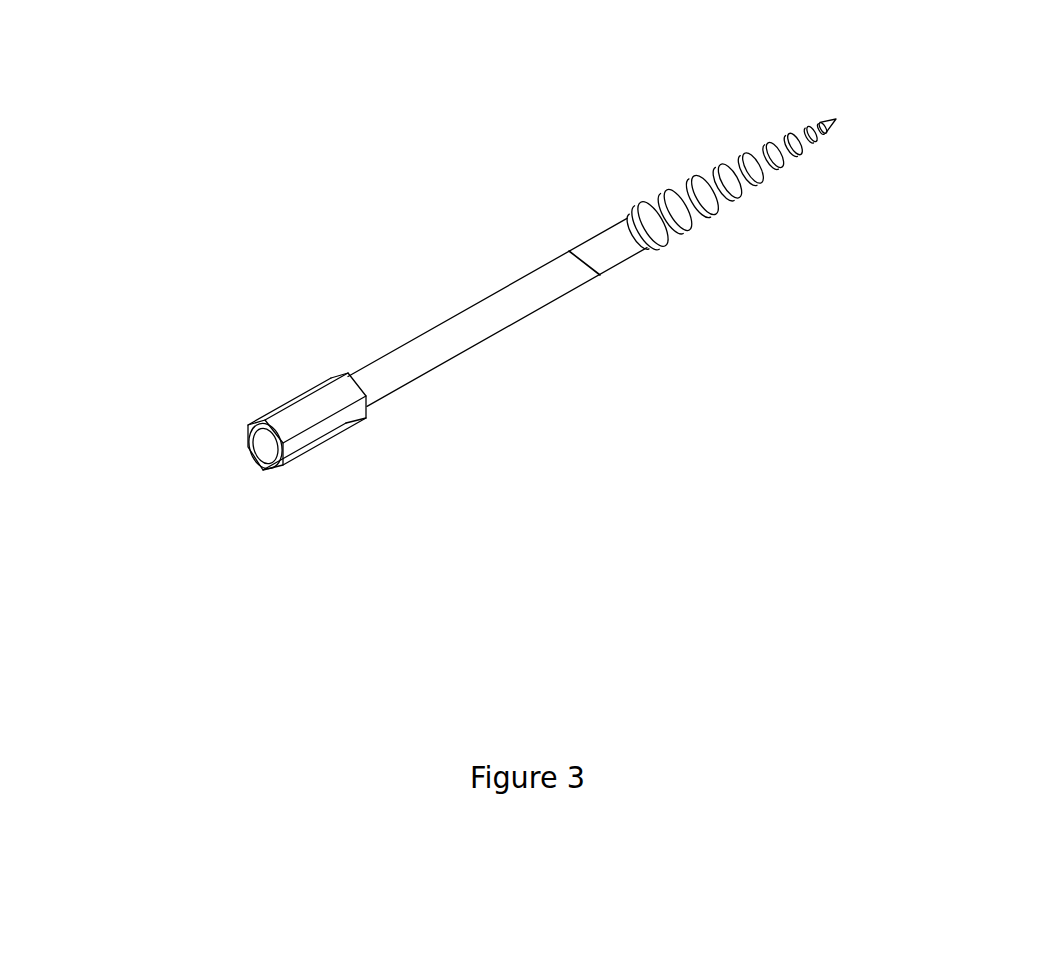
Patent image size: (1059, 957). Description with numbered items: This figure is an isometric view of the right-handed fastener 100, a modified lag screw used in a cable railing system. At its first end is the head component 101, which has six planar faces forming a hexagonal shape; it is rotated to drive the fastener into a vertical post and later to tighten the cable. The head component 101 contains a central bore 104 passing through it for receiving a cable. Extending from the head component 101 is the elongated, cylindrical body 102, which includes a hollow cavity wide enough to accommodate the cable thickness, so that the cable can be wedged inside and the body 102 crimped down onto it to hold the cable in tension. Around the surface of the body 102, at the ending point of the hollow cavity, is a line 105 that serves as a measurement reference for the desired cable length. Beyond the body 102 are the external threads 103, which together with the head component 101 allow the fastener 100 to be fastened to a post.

The right-handed fastener 100 is at (461, 322).
The head component 101 is at (202, 421).
The body 102 is at (557, 250).
The external threads 103 is at (650, 177).
The central bore 104 is at (270, 461).
The line 105 is at (616, 284).